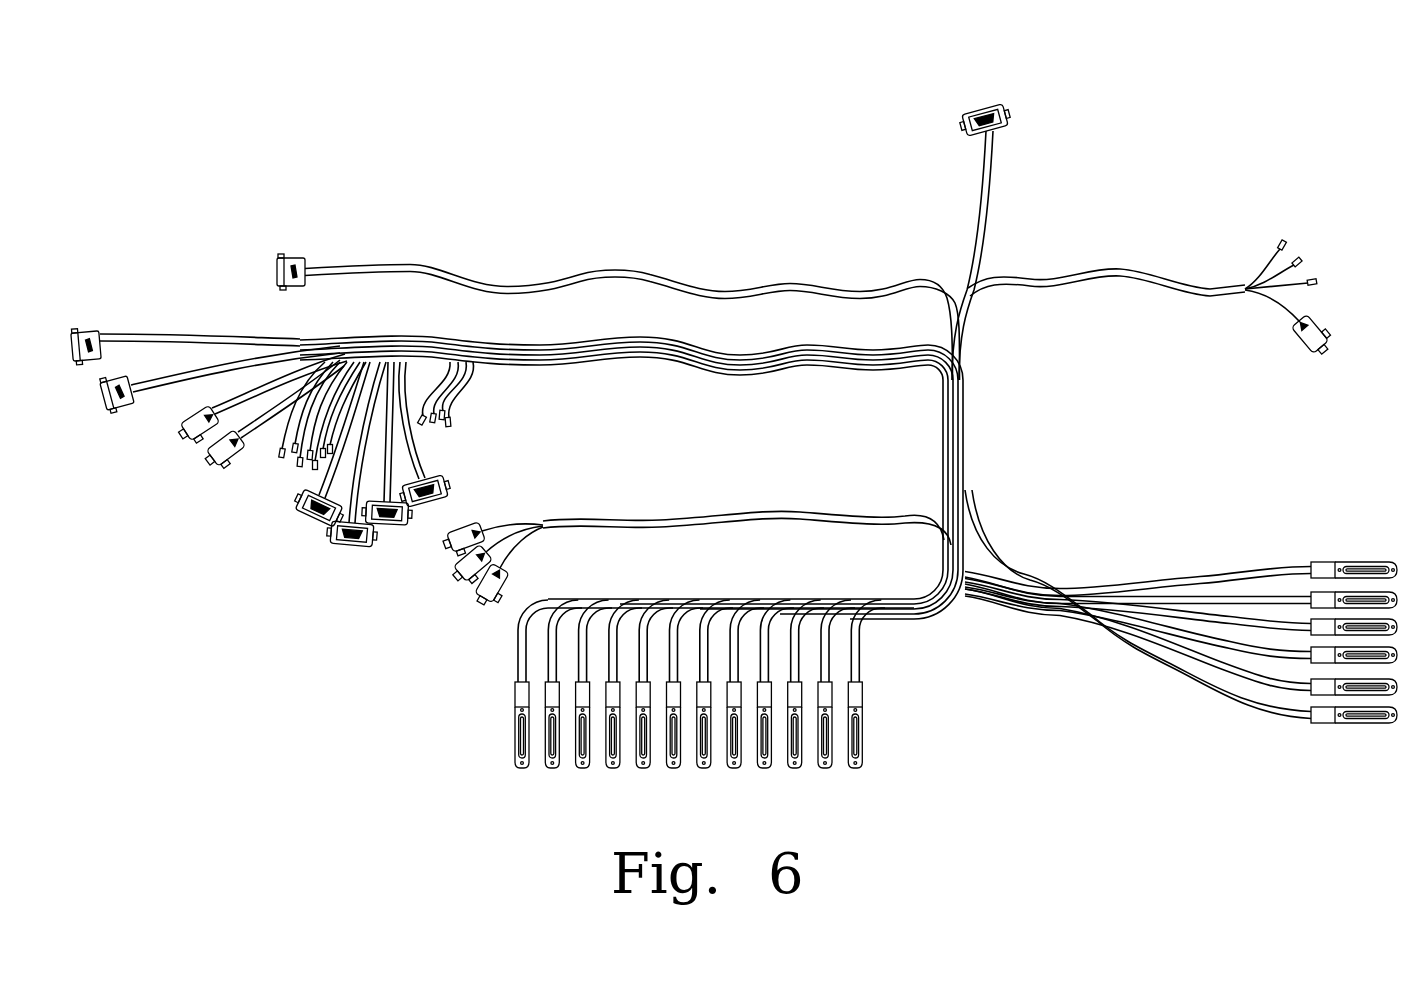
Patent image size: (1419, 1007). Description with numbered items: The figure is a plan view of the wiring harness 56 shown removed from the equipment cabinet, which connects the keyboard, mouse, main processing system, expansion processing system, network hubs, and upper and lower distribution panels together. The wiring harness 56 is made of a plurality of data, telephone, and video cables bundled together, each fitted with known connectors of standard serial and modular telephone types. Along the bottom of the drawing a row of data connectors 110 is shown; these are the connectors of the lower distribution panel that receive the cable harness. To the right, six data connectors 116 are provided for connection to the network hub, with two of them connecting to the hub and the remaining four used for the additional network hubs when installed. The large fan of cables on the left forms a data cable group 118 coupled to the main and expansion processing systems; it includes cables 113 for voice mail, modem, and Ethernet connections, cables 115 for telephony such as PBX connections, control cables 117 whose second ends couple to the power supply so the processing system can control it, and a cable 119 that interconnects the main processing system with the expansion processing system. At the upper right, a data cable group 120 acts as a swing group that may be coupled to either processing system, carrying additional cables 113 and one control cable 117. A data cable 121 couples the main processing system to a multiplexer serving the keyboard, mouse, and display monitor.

The wiring harness 56 is at (1242, 68).
The data connectors 110 is at (856, 771).
The cables 113 is at (281, 460).
The cables 115 is at (305, 522).
The data connectors 116 is at (1399, 563).
The control cables 117 is at (200, 445).
The data cable group 118 is at (188, 549).
The cable 119 is at (147, 390).
The data cable group 120 is at (1305, 236).
The data cable 121 is at (156, 336).